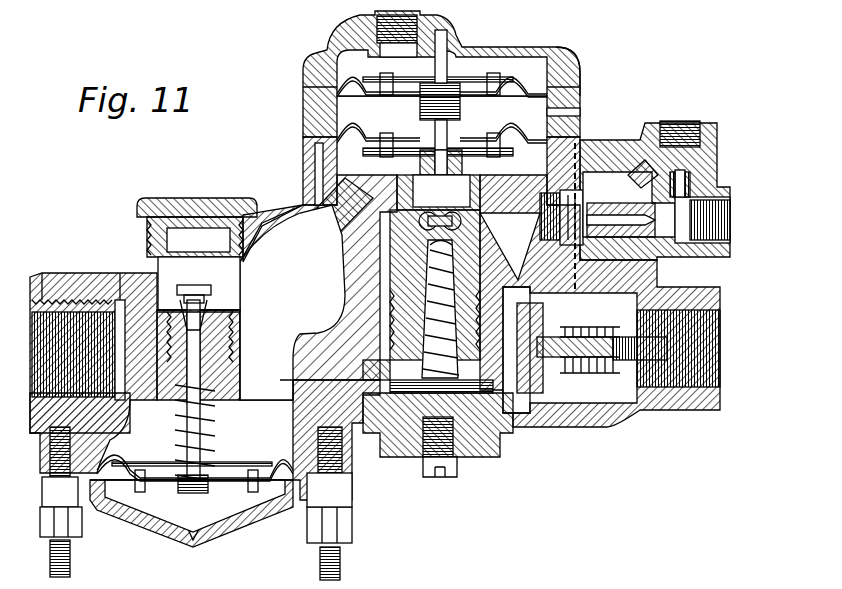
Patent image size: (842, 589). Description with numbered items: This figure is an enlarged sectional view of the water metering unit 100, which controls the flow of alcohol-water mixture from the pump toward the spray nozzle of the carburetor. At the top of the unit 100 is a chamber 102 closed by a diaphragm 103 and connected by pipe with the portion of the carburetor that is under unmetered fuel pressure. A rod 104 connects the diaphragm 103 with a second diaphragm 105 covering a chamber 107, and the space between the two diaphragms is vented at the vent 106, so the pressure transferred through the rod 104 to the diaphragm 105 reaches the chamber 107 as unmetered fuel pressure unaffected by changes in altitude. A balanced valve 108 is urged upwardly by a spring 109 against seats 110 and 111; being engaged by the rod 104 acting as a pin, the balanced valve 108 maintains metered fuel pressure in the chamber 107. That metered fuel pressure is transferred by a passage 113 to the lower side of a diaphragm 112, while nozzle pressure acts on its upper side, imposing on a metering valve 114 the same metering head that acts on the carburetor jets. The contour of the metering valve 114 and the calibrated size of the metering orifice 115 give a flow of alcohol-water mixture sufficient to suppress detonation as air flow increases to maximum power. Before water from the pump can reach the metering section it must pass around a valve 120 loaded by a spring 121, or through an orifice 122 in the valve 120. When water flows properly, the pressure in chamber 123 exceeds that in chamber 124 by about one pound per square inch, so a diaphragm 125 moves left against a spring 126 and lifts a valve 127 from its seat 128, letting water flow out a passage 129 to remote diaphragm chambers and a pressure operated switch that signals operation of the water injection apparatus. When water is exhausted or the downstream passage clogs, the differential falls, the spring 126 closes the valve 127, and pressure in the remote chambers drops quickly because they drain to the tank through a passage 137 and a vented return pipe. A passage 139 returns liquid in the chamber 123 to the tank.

The water metering unit 100 is at (330, 55).
The chamber 102 is at (525, 60).
The diaphragm 103 is at (566, 60).
The rod 104 is at (440, 40).
The diaphragm 105 is at (578, 96).
The vent 106 is at (577, 112).
The chamber 107 is at (352, 162).
The balanced valve 108 is at (450, 170).
The spring 109 is at (452, 262).
The seat 110 is at (468, 195).
The seat 111 is at (470, 218).
The diaphragm 112 is at (112, 510).
The passage 113 is at (338, 176).
The metering valve 114 is at (196, 300).
The metering orifice 115 is at (330, 235).
The valve 120 is at (535, 400).
The spring 121 is at (612, 380).
The orifice 122 is at (512, 302).
The chamber 123 is at (615, 300).
The chamber 124 is at (520, 405).
The diaphragm 125 is at (600, 150).
The spring 126 is at (575, 150).
The valve 127 is at (607, 213).
The seat 128 is at (650, 238).
The passage 129 is at (690, 216).
The passage 137 is at (690, 175).
The passage 139 is at (680, 135).